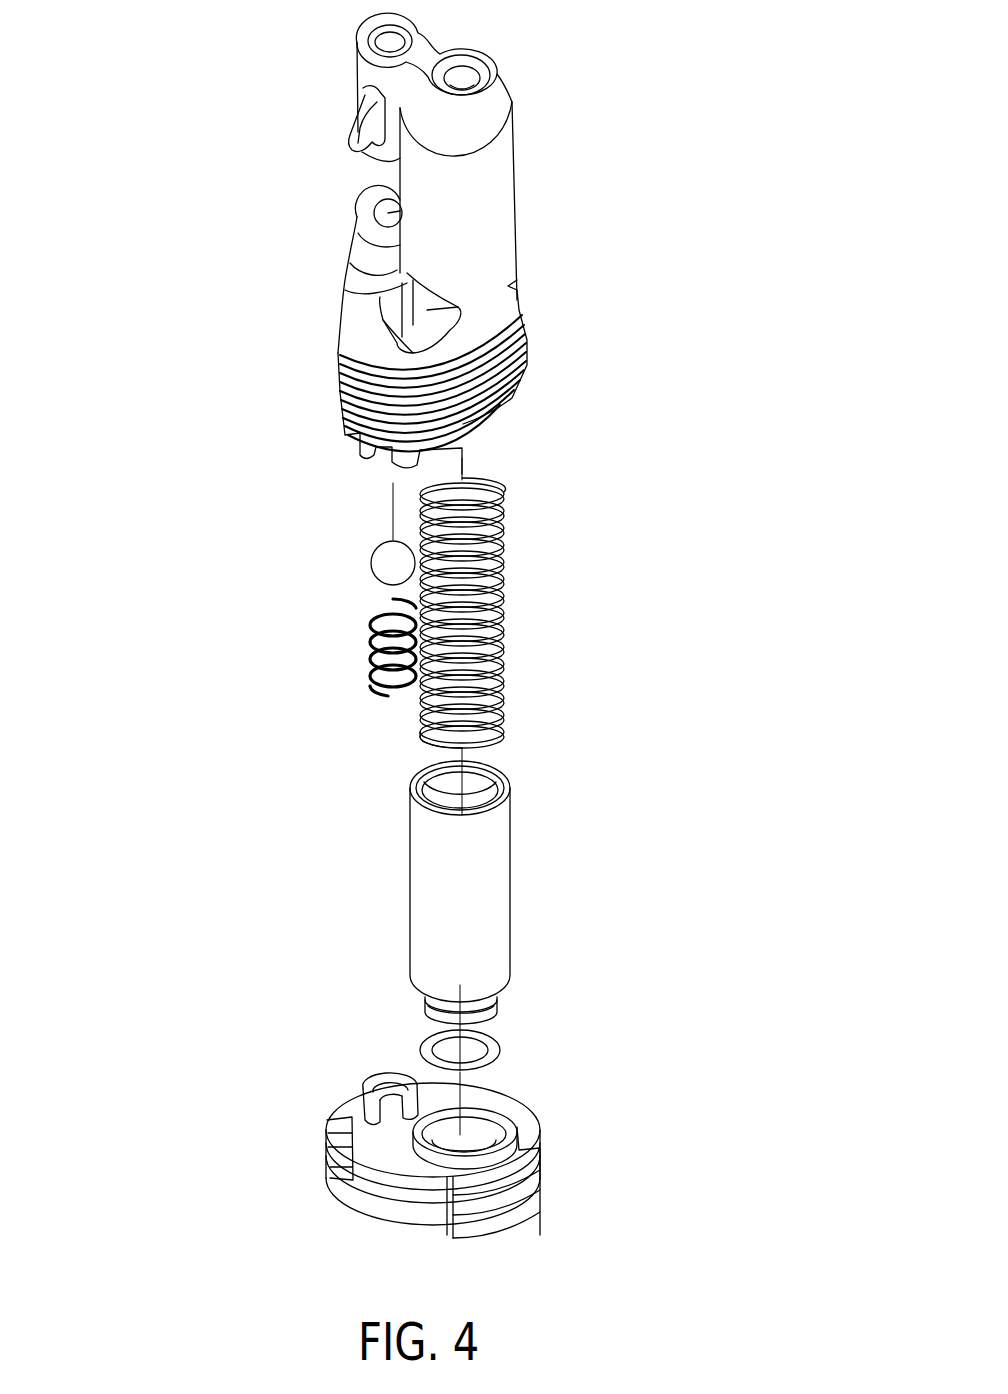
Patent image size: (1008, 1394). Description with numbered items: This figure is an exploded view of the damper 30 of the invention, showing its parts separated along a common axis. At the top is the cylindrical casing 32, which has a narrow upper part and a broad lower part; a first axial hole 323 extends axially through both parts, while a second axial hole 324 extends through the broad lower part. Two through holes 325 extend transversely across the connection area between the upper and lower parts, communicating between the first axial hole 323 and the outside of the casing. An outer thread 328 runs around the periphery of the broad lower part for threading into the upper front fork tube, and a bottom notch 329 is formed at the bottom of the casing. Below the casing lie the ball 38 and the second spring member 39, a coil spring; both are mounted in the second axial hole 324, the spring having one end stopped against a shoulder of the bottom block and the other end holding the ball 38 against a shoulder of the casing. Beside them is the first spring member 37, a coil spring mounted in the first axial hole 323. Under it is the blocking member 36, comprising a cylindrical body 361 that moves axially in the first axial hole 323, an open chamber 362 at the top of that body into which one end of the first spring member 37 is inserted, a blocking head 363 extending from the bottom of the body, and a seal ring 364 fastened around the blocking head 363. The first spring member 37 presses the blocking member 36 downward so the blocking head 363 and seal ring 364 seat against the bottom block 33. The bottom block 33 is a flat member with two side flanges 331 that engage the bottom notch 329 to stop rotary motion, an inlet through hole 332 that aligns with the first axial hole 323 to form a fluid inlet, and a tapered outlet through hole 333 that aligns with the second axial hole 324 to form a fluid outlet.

The damper 30 is at (262, 92).
The cylindrical casing 32 is at (433, 243).
The first axial hole 323 is at (465, 78).
The second axial hole 324 is at (385, 210).
The through holes 325 is at (430, 313).
The outer thread 328 is at (352, 420).
The bottom notch 329 is at (505, 428).
The ball 38 is at (388, 567).
The second spring member 39 is at (372, 652).
The first spring member 37 is at (503, 602).
The blocking member 36 is at (593, 911).
The cylindrical body 361 is at (487, 878).
The open chamber 362 is at (488, 787).
The blocking head 363 is at (497, 1008).
The seal ring 364 is at (564, 1037).
The bottom block 33 is at (452, 1132).
The side flanges 331 is at (337, 1142).
The inlet through hole 332 is at (480, 1132).
The outlet through hole 333 is at (368, 1112).